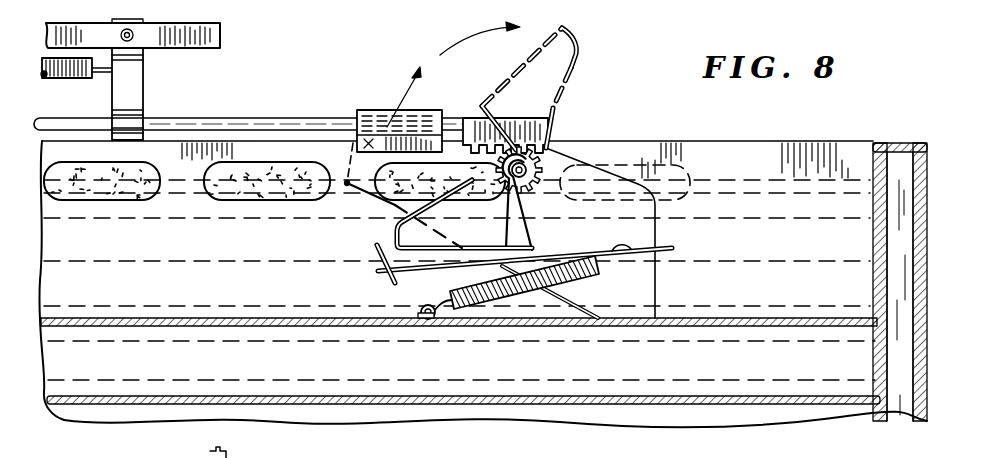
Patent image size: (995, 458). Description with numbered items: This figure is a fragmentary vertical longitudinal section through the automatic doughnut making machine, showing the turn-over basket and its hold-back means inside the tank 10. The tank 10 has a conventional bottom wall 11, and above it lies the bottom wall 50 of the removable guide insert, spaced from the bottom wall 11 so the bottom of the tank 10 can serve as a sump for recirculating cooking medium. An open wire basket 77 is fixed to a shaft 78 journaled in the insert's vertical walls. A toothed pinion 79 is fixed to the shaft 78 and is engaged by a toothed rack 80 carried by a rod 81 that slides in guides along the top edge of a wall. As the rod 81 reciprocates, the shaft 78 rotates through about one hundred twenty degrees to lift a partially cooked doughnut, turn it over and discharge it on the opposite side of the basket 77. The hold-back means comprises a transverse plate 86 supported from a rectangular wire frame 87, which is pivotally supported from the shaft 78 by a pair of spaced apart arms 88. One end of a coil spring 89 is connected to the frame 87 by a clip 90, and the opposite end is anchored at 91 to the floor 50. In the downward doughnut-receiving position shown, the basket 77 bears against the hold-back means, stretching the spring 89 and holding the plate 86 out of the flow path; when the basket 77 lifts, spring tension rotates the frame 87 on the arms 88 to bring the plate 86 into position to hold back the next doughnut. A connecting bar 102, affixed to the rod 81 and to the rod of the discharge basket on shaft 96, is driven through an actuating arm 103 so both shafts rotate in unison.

The tank 10 is at (852, 409).
The bottom wall 11 is at (722, 403).
The bottom wall 50 is at (133, 318).
The open wire basket 77 is at (393, 227).
The shaft 78 is at (550, 140).
The toothed pinion 79 is at (548, 152).
The toothed rack 80 is at (473, 128).
The rod 81 is at (293, 122).
The transverse plate 86 is at (378, 266).
The rectangular wire frame 87 is at (672, 250).
The arms 88 is at (536, 243).
The coil spring 89 is at (495, 322).
The clip 90 is at (620, 257).
The anchor 91 is at (410, 309).
The shaft 96 is at (893, 145).
The connecting bar 102 is at (143, 90).
The actuating arm 103 is at (222, 35).